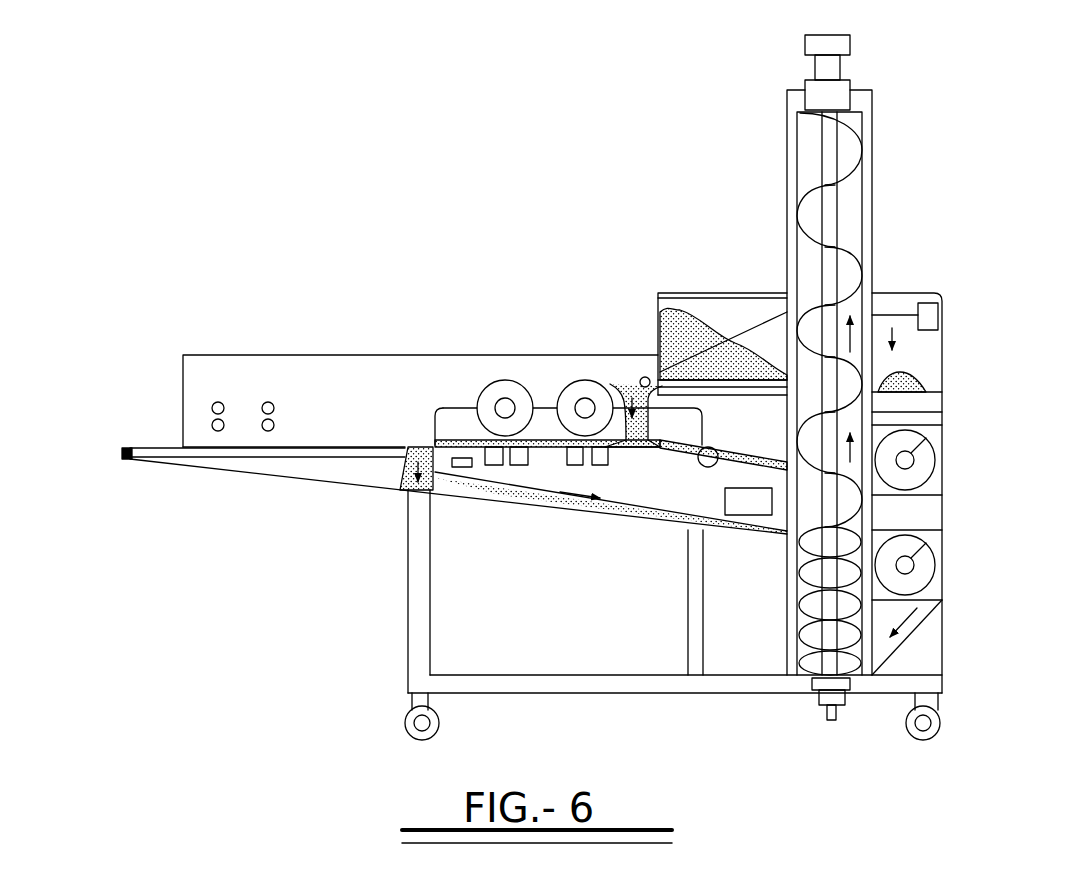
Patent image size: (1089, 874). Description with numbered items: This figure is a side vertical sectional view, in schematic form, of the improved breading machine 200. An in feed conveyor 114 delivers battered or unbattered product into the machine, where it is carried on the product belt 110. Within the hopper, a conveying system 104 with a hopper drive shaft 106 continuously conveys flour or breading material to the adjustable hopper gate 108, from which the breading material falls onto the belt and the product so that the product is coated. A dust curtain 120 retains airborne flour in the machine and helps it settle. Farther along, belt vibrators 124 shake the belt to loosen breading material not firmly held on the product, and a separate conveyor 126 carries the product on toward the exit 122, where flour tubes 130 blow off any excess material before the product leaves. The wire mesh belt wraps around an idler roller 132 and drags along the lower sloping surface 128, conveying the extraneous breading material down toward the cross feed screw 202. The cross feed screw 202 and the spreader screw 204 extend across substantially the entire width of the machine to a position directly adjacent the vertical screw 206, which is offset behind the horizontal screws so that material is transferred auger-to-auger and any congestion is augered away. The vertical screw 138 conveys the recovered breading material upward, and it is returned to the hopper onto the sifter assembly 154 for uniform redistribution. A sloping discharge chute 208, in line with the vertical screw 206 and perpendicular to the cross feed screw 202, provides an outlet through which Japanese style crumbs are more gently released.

The breading machine 200 is at (583, 186).
The vertical screw 206 is at (827, 167).
The vertical screw 138 is at (860, 150).
The hopper gate 108 is at (644, 376).
The sifter assembly 154 is at (906, 305).
The hopper drive shaft 106 is at (626, 392).
The dust curtain 120 is at (453, 428).
The flour tubes 130 is at (268, 402).
The conveying system 104 is at (920, 380).
The exit 122 is at (174, 441).
The separate conveyor 126 is at (300, 452).
The in feed conveyor 114 is at (920, 410).
The spreader screw 204 is at (922, 462).
The idler roller 132 is at (123, 456).
The lower sloping surface 128 is at (443, 490).
The belt vibrators 124 is at (465, 468).
The product belt 110 is at (660, 448).
The cross feed screw 202 is at (922, 568).
The discharge chute 208 is at (920, 620).